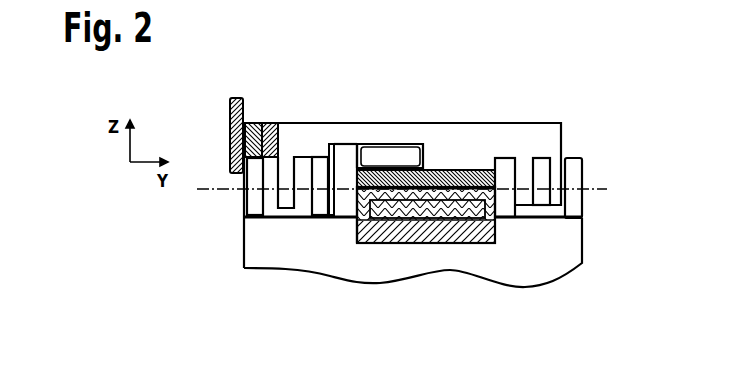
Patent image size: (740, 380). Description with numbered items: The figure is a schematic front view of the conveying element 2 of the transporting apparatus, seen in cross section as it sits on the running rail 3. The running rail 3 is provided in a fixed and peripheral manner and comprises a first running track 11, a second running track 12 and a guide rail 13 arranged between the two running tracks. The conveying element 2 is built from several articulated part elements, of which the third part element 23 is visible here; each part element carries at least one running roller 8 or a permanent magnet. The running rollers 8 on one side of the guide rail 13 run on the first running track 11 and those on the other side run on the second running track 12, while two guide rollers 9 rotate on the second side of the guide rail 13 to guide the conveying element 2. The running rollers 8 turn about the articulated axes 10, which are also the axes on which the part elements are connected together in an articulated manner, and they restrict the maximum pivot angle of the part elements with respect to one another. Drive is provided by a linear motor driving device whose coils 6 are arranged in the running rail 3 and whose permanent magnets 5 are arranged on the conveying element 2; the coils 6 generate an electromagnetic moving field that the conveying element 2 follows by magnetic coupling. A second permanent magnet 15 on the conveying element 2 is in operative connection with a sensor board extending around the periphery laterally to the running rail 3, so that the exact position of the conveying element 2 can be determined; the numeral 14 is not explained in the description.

The conveying element 2 is at (387, 123).
The running rail 3 is at (572, 243).
The permanent magnets 5 is at (492, 165).
The coils 6 is at (430, 222).
The running rollers 8 is at (319, 154).
The guide rollers 9 is at (414, 153).
The articulated axes 10 is at (208, 192).
The first running track 11 is at (296, 217).
The second running track 12 is at (538, 217).
The guide rail 13 is at (348, 162).
The cover 14 is at (236, 101).
The second permanent magnet 15 is at (267, 125).
The third part element 23 is at (458, 135).